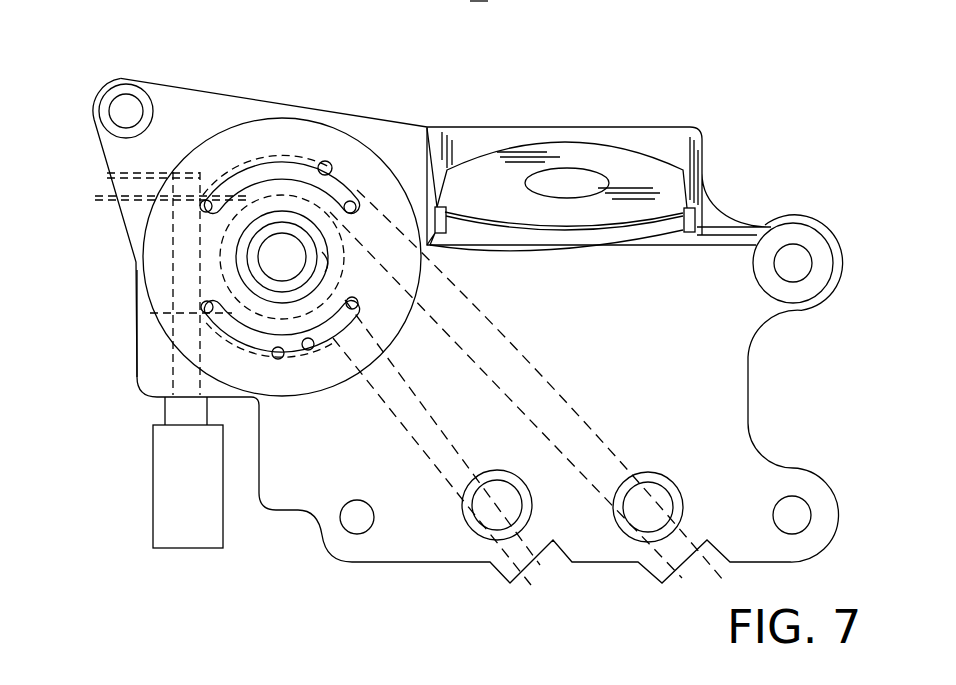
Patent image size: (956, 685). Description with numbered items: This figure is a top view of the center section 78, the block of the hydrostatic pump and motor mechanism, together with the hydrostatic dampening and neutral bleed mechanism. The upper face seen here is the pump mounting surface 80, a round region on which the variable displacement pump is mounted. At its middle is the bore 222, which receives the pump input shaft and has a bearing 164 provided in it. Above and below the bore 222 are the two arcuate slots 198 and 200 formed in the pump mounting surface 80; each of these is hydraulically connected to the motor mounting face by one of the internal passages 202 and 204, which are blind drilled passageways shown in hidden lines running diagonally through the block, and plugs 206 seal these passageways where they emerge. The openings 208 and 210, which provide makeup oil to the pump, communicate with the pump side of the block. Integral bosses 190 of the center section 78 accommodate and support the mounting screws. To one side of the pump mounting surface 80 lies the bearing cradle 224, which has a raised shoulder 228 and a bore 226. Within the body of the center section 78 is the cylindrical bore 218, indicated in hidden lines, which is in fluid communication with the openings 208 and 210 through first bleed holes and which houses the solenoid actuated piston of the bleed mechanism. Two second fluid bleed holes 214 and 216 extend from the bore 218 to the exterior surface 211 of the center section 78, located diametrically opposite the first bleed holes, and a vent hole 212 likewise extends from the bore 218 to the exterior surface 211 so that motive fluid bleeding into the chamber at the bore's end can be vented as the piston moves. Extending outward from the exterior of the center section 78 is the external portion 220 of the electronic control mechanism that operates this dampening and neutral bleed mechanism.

The center section 78 is at (768, 142).
The pump mounting surface 80 is at (275, 140).
The bearing 164 is at (253, 247).
The integral bosses 190 is at (123, 85).
The arcuate slot 198 is at (318, 347).
The arcuate slot 200 is at (326, 168).
The internal passage 202 is at (535, 365).
The internal passage 204 is at (430, 450).
The plugs 206 is at (612, 540).
The opening 208 is at (272, 355).
The opening 210 is at (268, 192).
The exterior surface 211 is at (138, 362).
The vent hole 212 is at (107, 175).
The second fluid bleed hole 214 is at (112, 199).
The second fluid bleed hole 216 is at (200, 313).
The cylindrical bore 218 is at (172, 263).
The external portion of the electronic control mechanism 220 is at (160, 465).
The bore 222 is at (322, 252).
The bearing cradle 224 is at (653, 173).
The bore 226 is at (553, 187).
The raised shoulder 228 is at (638, 228).